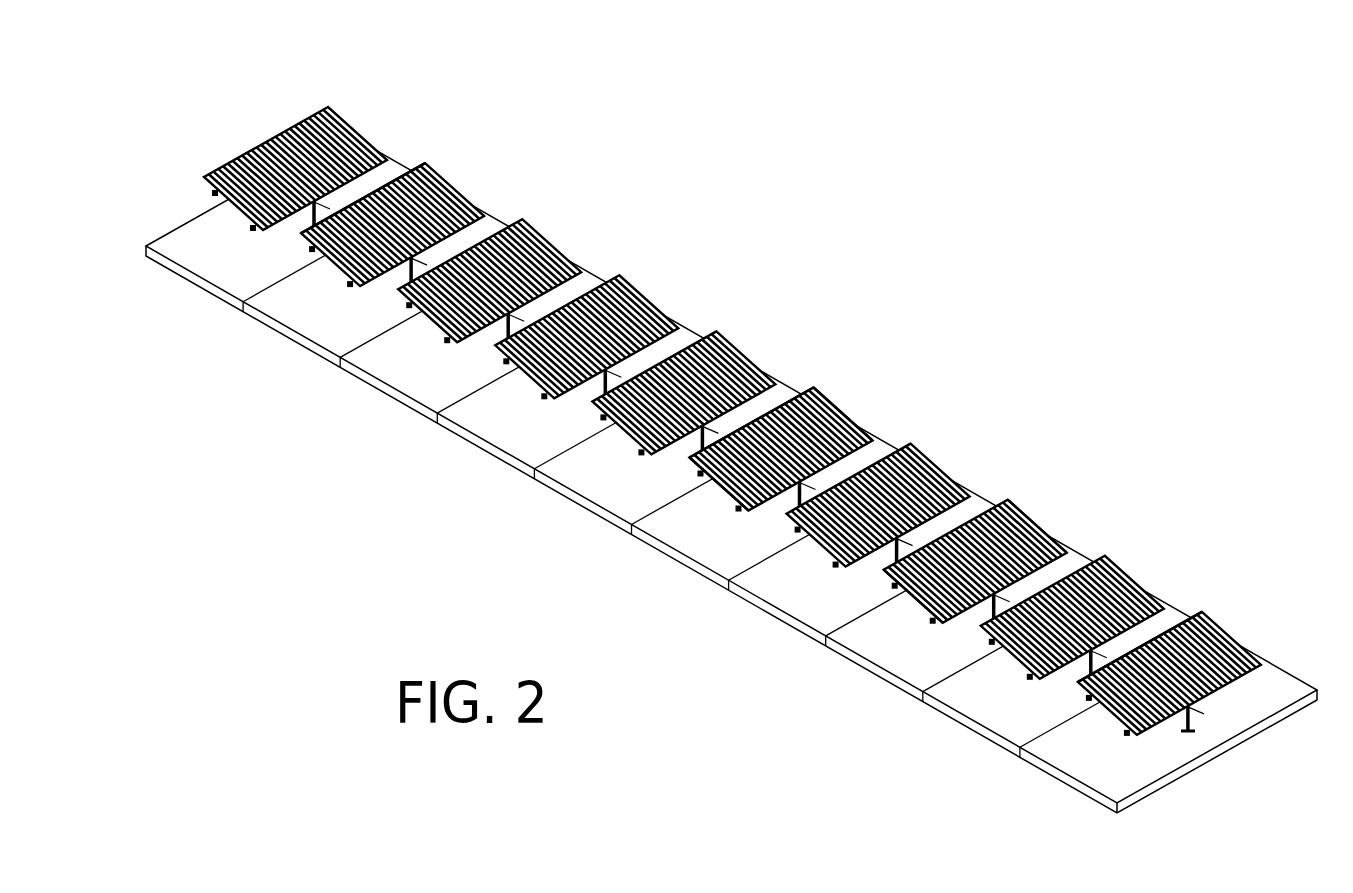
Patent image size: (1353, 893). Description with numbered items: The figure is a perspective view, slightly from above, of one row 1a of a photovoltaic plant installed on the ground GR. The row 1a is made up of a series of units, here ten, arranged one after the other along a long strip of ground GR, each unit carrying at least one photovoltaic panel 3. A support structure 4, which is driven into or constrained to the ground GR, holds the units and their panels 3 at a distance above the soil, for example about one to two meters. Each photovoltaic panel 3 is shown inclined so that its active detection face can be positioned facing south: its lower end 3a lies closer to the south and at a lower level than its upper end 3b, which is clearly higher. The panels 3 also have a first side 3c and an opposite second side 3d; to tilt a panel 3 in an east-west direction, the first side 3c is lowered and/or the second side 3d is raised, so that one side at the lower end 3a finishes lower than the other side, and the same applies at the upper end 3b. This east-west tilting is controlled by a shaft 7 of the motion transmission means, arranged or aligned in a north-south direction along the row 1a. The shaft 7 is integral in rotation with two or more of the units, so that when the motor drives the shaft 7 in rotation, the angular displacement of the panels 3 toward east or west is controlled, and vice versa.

The row 1a is at (737, 460).
The photovoltaic panel 3 is at (283, 142).
The lower end 3a is at (472, 344).
The upper end 3b is at (378, 184).
The first side 3c is at (838, 409).
The second side 3d is at (706, 482).
The support structure 4 is at (607, 378).
The shaft 7 is at (517, 327).
The ground GR is at (300, 320).